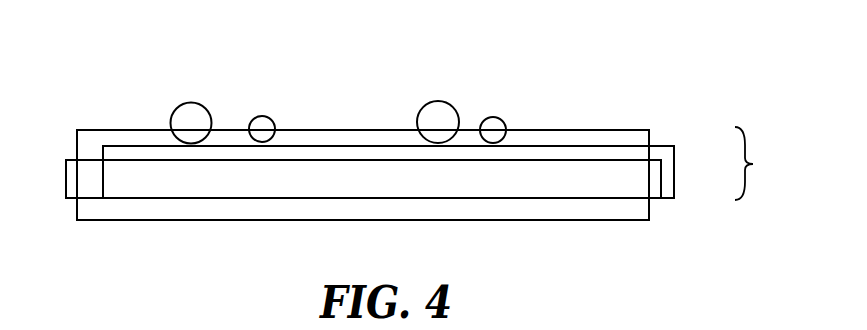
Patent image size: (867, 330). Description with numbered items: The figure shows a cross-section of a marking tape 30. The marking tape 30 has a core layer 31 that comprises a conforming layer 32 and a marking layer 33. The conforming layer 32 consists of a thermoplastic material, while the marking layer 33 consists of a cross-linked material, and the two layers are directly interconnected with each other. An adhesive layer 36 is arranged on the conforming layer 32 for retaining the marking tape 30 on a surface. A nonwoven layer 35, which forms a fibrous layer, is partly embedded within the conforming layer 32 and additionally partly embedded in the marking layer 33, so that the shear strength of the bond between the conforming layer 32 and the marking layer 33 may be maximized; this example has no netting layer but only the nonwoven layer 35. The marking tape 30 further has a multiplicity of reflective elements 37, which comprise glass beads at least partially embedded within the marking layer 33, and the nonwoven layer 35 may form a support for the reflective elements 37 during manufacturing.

The marking tape 30 is at (600, 90).
The core layer 31 is at (764, 163).
The conforming layer 32 is at (649, 184).
The marking layer 33 is at (90, 142).
The nonwoven layer 35 is at (668, 158).
The adhesive layer 36 is at (504, 210).
The reflective elements 37 is at (190, 117).